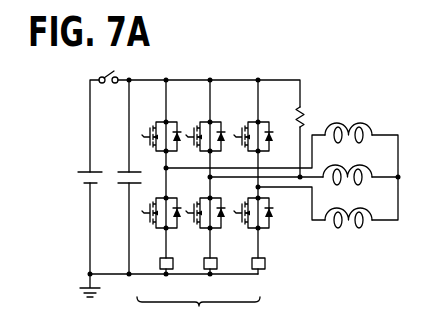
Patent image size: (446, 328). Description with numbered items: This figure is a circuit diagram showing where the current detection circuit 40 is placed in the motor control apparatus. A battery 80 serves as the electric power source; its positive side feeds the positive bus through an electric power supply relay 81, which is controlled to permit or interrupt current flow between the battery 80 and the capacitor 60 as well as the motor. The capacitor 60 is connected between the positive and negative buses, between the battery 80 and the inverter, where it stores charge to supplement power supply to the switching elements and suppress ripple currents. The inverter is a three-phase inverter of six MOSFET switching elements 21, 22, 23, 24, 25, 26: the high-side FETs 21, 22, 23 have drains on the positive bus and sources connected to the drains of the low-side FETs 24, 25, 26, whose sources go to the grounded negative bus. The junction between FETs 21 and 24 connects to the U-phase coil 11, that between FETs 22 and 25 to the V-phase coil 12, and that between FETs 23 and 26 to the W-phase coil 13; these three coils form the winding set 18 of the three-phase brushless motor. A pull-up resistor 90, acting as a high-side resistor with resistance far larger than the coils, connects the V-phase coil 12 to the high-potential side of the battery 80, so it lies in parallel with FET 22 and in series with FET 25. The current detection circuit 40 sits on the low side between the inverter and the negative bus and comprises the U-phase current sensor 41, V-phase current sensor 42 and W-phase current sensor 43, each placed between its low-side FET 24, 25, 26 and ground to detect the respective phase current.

The U-phase coil 11 is at (366, 121).
The V-phase coil 12 is at (366, 164).
The W-phase coil 13 is at (366, 207).
The winding set 18 is at (350, 234).
The switching element 21 is at (169, 120).
The switching element 22 is at (213, 120).
The switching element 23 is at (261, 120).
The switching element 24 is at (171, 230).
The switching element 25 is at (215, 230).
The switching element 26 is at (263, 230).
The current detection circuit 40 is at (198, 312).
The U-phase current sensor 41 is at (164, 271).
The V-phase current sensor 42 is at (207, 271).
The W-phase current sensor 43 is at (256, 271).
The capacitor 60 is at (124, 170).
The battery 80 is at (84, 170).
The electric power supply relay 81 is at (99, 77).
The pull-up resistor 90 is at (304, 111).